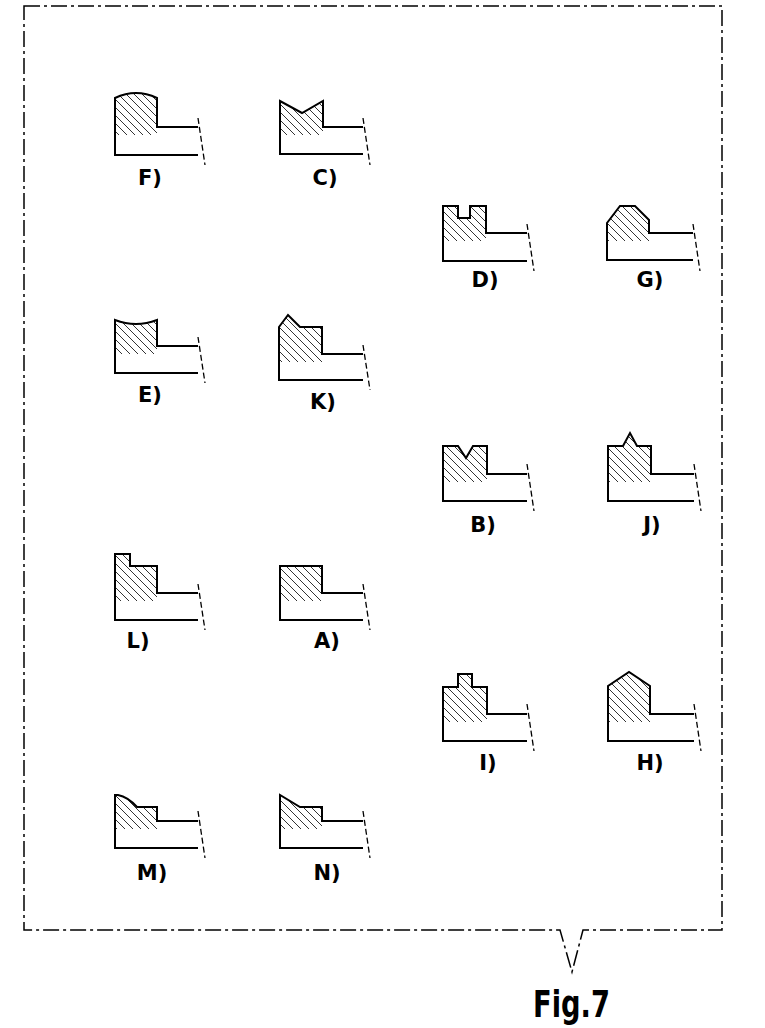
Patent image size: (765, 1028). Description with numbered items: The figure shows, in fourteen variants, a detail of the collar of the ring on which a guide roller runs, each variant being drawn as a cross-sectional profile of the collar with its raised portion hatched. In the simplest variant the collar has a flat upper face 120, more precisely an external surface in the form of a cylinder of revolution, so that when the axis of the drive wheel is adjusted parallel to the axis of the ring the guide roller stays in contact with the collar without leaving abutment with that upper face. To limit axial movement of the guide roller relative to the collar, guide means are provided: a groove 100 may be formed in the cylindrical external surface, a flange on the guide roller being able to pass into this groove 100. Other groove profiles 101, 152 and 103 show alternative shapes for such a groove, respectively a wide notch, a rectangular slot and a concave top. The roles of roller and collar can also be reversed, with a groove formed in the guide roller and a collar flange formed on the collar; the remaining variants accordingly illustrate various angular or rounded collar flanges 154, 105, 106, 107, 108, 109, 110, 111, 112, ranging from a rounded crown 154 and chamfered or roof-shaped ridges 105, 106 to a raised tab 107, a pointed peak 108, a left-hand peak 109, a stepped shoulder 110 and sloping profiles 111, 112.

In FIG. 7B, the groove 100 is at (477, 447).
In FIG. 7C, the groove profile 101 is at (313, 101).
In FIG. 7E, the groove profile 103 is at (148, 319).
In FIG. 7G, the collar flange 105 is at (642, 206).
In FIG. 7H, the collar flange 106 is at (643, 677).
In FIG. 7I, the collar flange 107 is at (477, 677).
In FIG. 7J, the collar flange 108 is at (644, 437).
In FIG. 7K, the collar flange 109 is at (313, 322).
In FIG. 7L, the collar flange 110 is at (142, 558).
In FIG. 7M, the collar flange 111 is at (146, 789).
In FIG. 7N, the collar flange 112 is at (311, 793).
In FIG. 7A, the flat upper face 120 is at (311, 563).
In FIG. 7D, the groove profile 152 is at (478, 206).
In FIG. 7F, the collar flange 154 is at (146, 93).